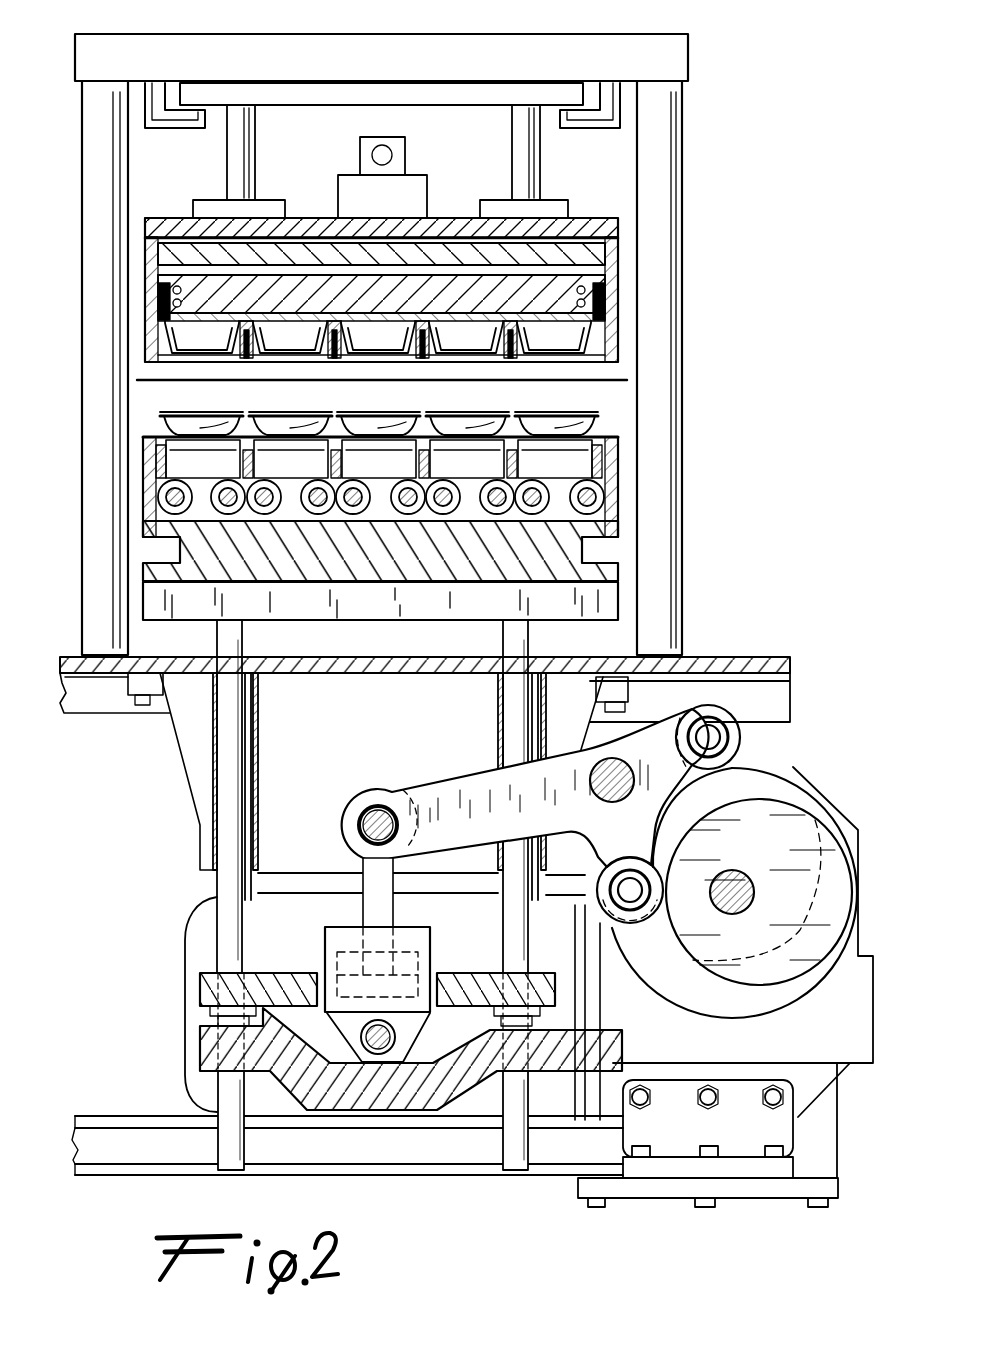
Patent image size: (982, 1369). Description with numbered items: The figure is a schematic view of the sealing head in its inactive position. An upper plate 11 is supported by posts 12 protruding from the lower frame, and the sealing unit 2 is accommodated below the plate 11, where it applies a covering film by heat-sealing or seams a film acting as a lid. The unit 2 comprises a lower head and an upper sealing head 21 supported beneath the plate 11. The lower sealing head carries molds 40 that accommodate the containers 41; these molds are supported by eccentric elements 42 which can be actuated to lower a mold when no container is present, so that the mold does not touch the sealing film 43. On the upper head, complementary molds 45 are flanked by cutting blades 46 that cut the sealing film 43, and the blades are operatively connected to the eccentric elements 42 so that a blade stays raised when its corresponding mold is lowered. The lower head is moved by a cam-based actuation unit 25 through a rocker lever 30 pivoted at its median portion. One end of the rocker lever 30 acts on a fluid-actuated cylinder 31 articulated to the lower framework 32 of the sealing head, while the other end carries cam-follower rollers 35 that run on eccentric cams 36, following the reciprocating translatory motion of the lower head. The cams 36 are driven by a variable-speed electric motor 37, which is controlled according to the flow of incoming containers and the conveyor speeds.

The sealing unit 2 is at (727, 533).
The upper plate 11 is at (485, 52).
The posts 12 is at (92, 572).
The upper sealing head 21 is at (622, 265).
The cam-based actuation unit 25 is at (824, 797).
The rocker lever 30 is at (453, 797).
The fluid-actuated cylinder 31 is at (353, 977).
The lower framework 32 is at (478, 972).
The cam-follower rollers 35 is at (740, 737).
The eccentric cams 36 is at (760, 768).
The variable-speed electric motor 37 is at (185, 1012).
The molds 40 is at (147, 460).
The containers 41 is at (173, 423).
The eccentric elements 42 is at (607, 507).
The sealing film 43 is at (608, 382).
The complementary molds 45 is at (310, 300).
The cutting blades 46 is at (395, 300).